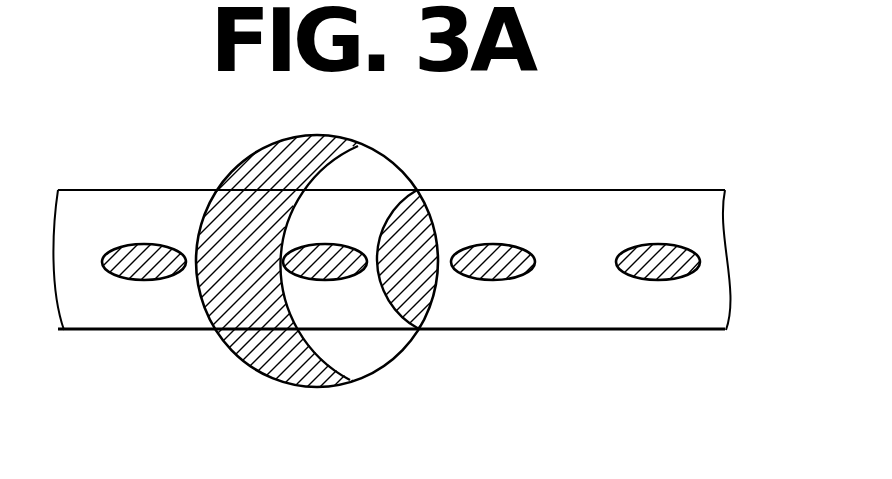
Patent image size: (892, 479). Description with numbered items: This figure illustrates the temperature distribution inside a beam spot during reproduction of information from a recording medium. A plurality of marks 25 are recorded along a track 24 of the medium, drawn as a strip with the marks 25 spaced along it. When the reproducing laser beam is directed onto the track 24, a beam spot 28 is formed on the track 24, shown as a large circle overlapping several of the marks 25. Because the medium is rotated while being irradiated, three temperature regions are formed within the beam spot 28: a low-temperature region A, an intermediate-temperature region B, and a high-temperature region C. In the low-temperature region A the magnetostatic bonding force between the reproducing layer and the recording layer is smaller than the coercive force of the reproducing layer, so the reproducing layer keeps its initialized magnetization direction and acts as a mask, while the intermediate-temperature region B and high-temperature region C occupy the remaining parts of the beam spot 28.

The track 24 is at (607, 195).
The marks 25 is at (698, 263).
The beam spot 28 is at (236, 170).
The low-temperature region A is at (243, 315).
The intermediate-temperature region B is at (372, 317).
The high-temperature region C is at (433, 237).